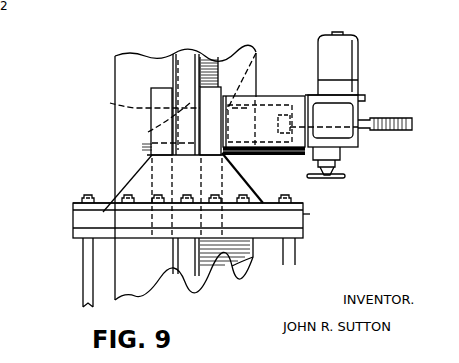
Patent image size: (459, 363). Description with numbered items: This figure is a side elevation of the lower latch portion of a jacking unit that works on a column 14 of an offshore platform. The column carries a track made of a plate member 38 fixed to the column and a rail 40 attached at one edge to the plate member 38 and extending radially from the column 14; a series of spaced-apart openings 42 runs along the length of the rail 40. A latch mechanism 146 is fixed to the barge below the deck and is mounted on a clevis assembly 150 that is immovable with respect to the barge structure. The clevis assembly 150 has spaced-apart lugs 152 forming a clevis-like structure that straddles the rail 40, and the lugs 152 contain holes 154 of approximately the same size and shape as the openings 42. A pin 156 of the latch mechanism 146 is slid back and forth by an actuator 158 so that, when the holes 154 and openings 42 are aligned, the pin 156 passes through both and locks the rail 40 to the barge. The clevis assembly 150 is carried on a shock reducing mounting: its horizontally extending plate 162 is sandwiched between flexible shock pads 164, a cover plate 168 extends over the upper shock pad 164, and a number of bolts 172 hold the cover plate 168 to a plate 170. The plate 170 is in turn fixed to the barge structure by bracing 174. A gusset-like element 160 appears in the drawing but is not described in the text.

The column 14 is at (123, 65).
The rail 40 is at (183, 67).
The openings 42 is at (150, 130).
The plate member 38 is at (231, 258).
The latch mechanism 146 is at (296, 80).
The clevis assembly 150 is at (133, 174).
The lugs 152 is at (163, 90).
The holes 154 is at (118, 105).
The pin 156 is at (263, 117).
The actuator 158 is at (361, 66).
The gusset plate 160 is at (147, 163).
The plate 162 is at (82, 220).
The shock pads 164 is at (305, 210).
The cover plate 168 is at (300, 203).
The plate 170 is at (297, 238).
The bolts 172 is at (83, 198).
The bracing 174 is at (85, 267).